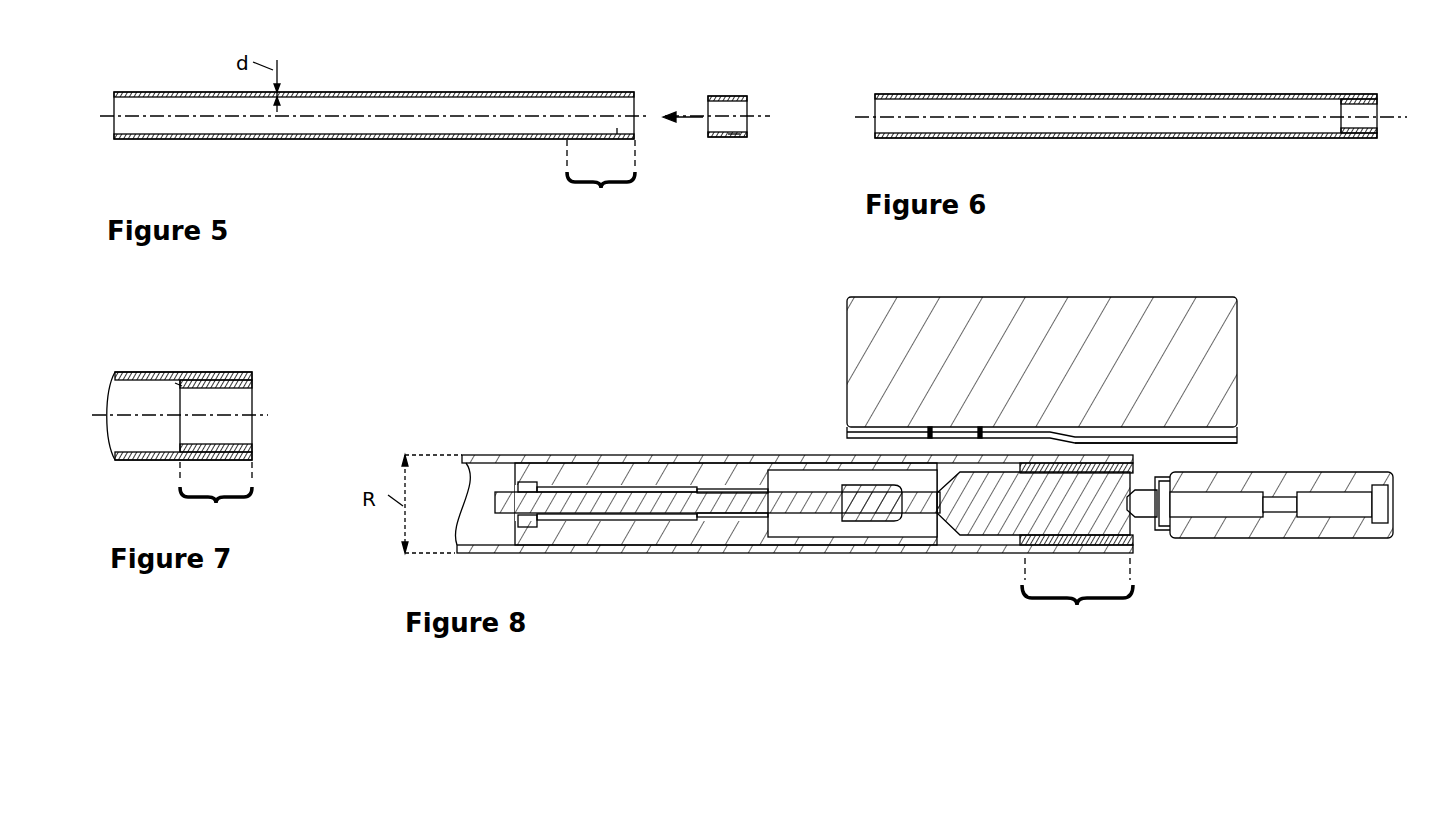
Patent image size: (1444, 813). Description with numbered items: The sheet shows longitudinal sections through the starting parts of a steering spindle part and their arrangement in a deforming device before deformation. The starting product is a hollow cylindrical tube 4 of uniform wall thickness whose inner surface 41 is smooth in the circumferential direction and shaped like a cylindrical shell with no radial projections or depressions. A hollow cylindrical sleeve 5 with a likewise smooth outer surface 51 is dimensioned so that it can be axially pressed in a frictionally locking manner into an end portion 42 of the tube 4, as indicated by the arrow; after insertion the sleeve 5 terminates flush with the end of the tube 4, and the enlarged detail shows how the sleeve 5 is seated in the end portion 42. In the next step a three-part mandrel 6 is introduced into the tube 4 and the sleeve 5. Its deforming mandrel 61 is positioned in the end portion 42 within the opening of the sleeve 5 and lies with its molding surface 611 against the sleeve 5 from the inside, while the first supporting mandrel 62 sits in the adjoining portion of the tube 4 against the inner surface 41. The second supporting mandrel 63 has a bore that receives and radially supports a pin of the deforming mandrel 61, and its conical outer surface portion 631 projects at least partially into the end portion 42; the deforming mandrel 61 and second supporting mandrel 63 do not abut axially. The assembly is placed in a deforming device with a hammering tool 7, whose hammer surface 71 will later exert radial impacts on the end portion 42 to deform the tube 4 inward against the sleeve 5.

In FIG. 5, the tube 4 is at (343, 92).
In FIG. 6, the tube 4 is at (1112, 94).
In FIG. 7, the tube 4 is at (149, 372).
In FIG. 8, the tube 4 is at (663, 455).
In FIG. 5, the inner surface 41 is at (617, 128).
In FIG. 7, the inner surface 41 is at (175, 383).
In FIG. 5, the end portion 42 is at (601, 181).
In FIG. 7, the end portion 42 is at (216, 495).
In FIG. 8, the end portion 42 is at (1077, 601).
In FIG. 5, the sleeve 5 is at (733, 96).
In FIG. 6, the sleeve 5 is at (1353, 138).
In FIG. 7, the sleeve 5 is at (222, 378).
In FIG. 8, the sleeve 5 is at (1040, 548).
In FIG. 5, the outer surface 51 is at (733, 137).
In FIG. 7, the outer surface 51 is at (237, 390).
In FIG. 8, the mandrel 6 is at (1158, 565).
In FIG. 8, the deforming mandrel 61 is at (985, 510).
In FIG. 8, the molding surface 611 is at (1135, 548).
In FIG. 8, the first supporting mandrel 62 is at (668, 532).
In FIG. 8, the second supporting mandrel 63 is at (1315, 527).
In FIG. 8, the conical outer surface portion 631 is at (1152, 540).
In FIG. 8, the hammering tool 7 is at (1090, 340).
In FIG. 8, the hammer surface 71 is at (1165, 445).